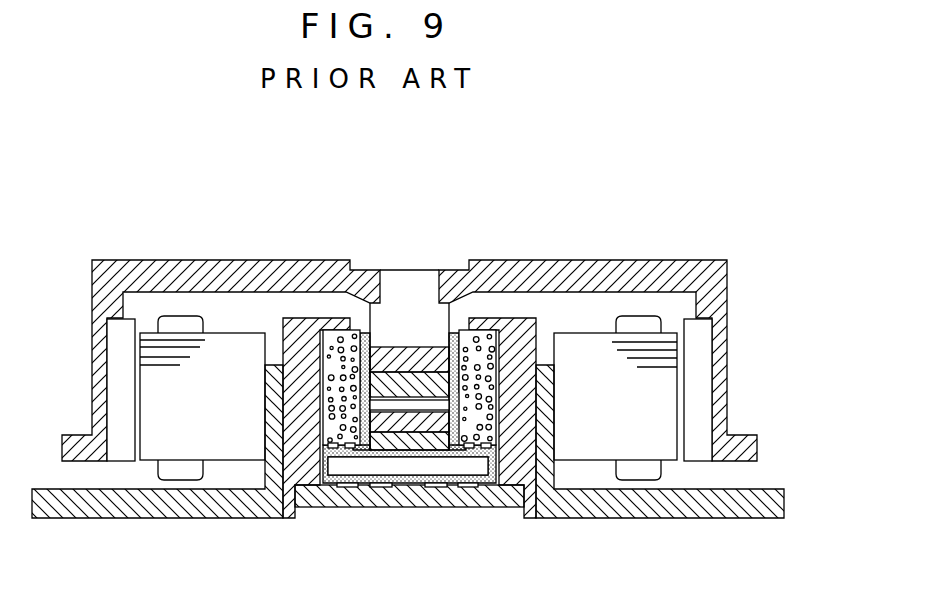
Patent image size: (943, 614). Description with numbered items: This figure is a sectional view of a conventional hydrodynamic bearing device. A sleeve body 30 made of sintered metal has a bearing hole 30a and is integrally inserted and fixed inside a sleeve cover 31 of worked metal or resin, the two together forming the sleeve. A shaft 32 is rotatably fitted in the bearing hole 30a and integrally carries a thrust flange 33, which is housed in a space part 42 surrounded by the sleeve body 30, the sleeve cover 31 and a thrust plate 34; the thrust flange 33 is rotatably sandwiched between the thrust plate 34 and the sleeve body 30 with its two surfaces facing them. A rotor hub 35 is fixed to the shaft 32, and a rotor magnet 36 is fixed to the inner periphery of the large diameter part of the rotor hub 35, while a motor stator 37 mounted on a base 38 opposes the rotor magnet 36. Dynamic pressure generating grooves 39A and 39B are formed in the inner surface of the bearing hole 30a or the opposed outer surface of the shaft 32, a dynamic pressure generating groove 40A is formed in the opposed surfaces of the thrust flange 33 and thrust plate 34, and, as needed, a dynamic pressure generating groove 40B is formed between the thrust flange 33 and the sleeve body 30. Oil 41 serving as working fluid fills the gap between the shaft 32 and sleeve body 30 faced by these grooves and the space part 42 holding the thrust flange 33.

The sleeve body 30 is at (472, 338).
The bearing hole 30a is at (450, 424).
The sleeve cover 31 is at (513, 332).
The shaft 32 is at (405, 315).
The thrust flange 33 is at (338, 488).
The thrust plate 34 is at (520, 505).
The rotor hub 35 is at (627, 282).
The rotor magnet 36 is at (697, 350).
The motor stator 37 is at (632, 437).
The base 38 is at (687, 503).
The dynamic pressure generating groove 39A is at (413, 347).
The dynamic pressure generating groove 39B is at (385, 418).
The dynamic pressure generating groove 40A is at (344, 463).
The dynamic pressure generating groove 40B is at (470, 460).
The oil 41 is at (362, 333).
The space part 42 is at (510, 498).